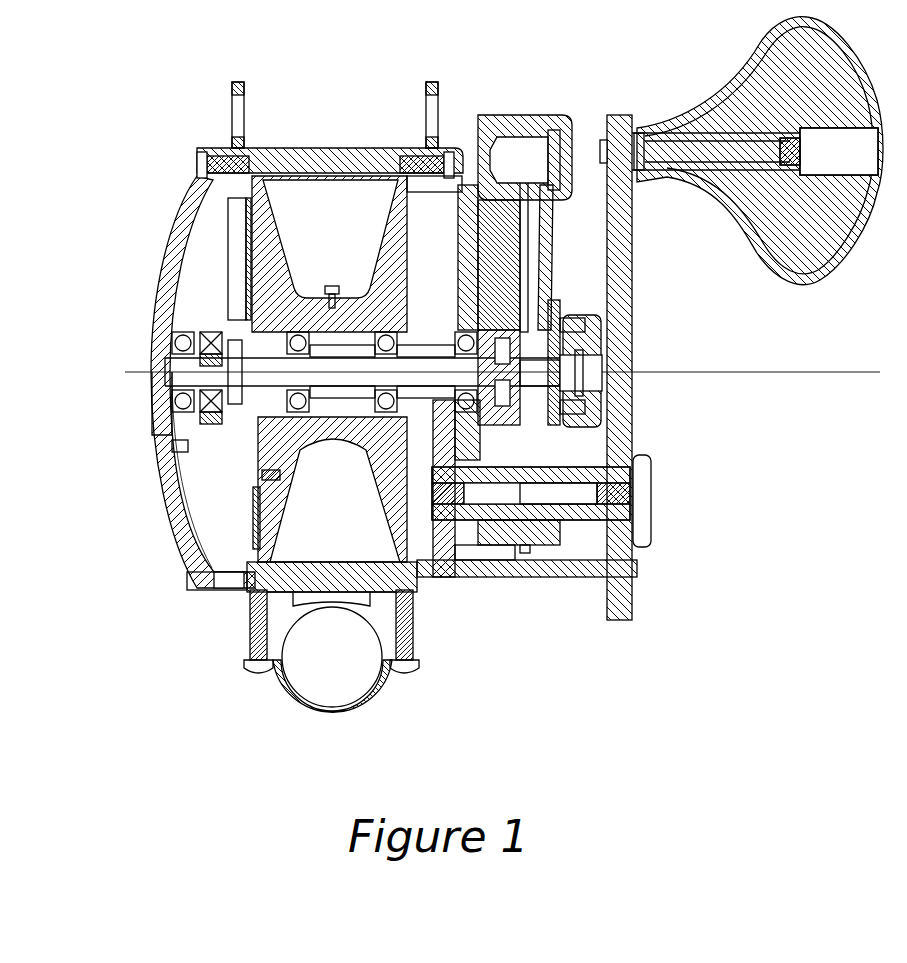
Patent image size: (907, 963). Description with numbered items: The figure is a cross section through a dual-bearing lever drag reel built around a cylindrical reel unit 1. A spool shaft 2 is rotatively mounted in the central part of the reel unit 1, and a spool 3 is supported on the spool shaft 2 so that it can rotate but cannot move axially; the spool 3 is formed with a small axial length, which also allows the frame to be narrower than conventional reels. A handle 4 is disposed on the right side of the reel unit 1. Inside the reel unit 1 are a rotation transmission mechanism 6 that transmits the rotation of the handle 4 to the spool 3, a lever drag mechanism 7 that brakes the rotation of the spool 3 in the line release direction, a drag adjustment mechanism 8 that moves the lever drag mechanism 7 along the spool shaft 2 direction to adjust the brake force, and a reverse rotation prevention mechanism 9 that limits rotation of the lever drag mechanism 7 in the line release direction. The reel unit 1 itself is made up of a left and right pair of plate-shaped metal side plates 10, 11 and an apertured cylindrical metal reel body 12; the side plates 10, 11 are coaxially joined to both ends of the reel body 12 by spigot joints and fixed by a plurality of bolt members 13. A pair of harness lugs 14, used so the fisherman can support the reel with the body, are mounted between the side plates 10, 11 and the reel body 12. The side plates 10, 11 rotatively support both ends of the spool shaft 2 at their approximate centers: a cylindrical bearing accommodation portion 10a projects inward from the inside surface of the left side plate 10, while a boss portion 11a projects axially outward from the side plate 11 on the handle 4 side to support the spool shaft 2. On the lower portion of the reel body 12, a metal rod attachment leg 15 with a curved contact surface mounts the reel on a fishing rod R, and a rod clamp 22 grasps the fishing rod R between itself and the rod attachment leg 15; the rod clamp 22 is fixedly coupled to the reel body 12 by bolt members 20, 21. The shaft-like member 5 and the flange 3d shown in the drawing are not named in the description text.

The reel unit 1 is at (452, 409).
The spool shaft 2 is at (362, 382).
The spool 3 is at (327, 428).
The spool flange plate 3d is at (258, 182).
The handle 4 is at (630, 272).
The screw shaft 5 is at (576, 510).
The rotation transmission mechanism 6 is at (466, 522).
The lever drag mechanism 7 is at (213, 500).
The drag adjustment mechanism 8 is at (482, 300).
The reverse rotation prevention mechanism 9 is at (186, 447).
The left side plate 10 is at (186, 562).
The bearing accommodation portion 10a is at (168, 428).
The right side plate 11 is at (455, 540).
The boss portion 11a is at (523, 272).
The reel body 12 is at (337, 148).
The bolt members 13 is at (218, 155).
The harness lugs 14 is at (239, 88).
The rod attachment leg 15 is at (400, 642).
The bolt member 20 is at (258, 672).
The bolt member 21 is at (418, 668).
The rod clamp 22 is at (305, 718).
The fishing rod R is at (343, 690).